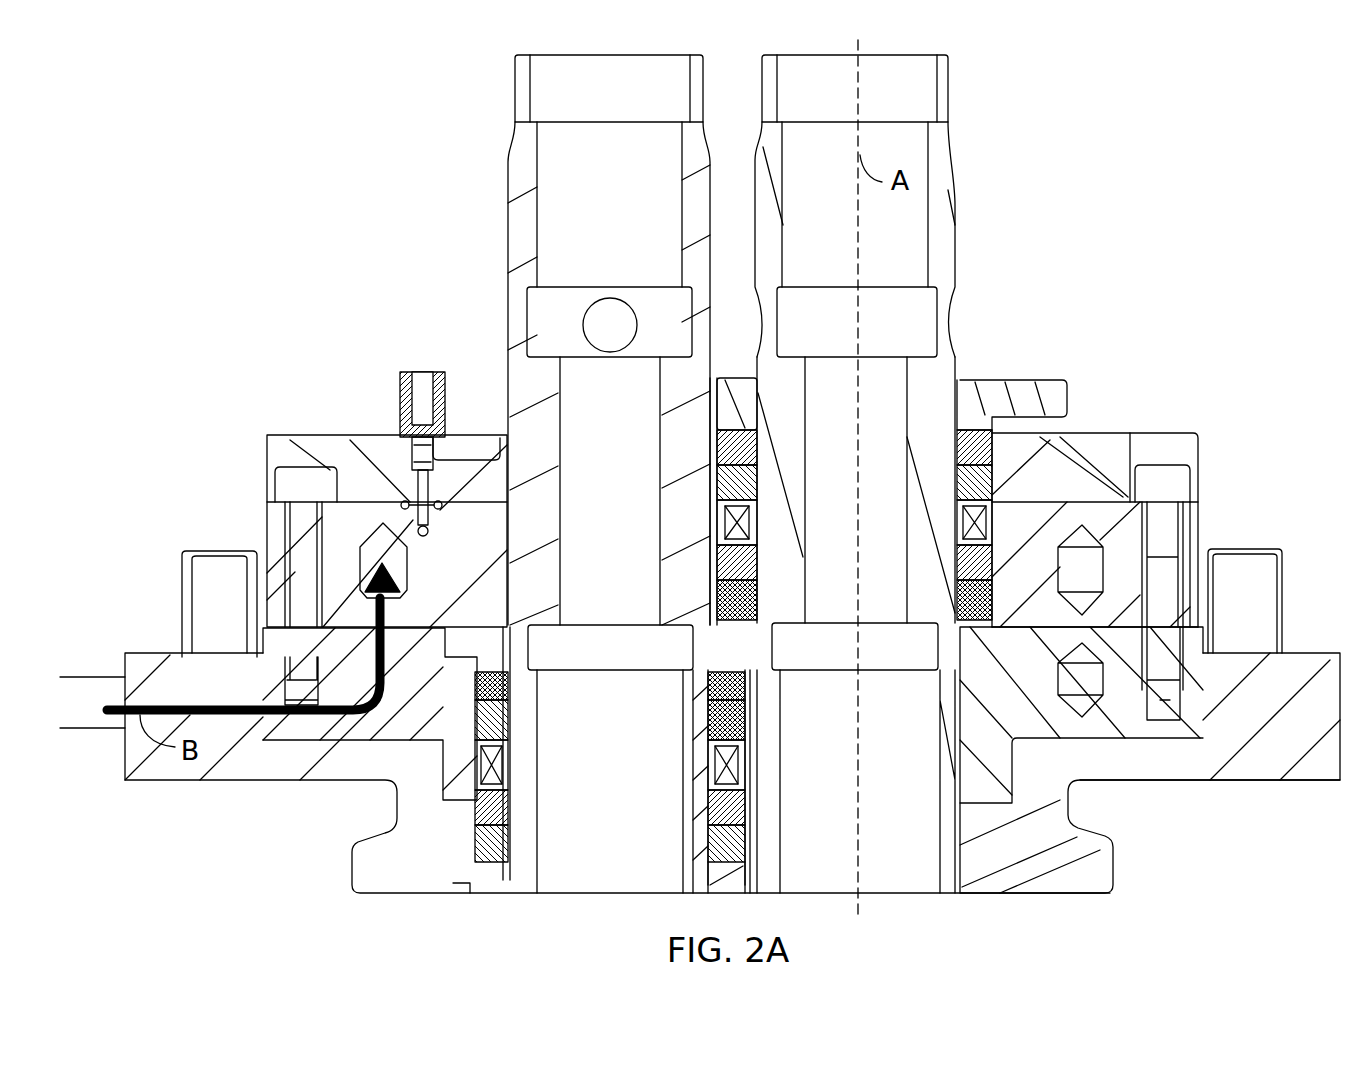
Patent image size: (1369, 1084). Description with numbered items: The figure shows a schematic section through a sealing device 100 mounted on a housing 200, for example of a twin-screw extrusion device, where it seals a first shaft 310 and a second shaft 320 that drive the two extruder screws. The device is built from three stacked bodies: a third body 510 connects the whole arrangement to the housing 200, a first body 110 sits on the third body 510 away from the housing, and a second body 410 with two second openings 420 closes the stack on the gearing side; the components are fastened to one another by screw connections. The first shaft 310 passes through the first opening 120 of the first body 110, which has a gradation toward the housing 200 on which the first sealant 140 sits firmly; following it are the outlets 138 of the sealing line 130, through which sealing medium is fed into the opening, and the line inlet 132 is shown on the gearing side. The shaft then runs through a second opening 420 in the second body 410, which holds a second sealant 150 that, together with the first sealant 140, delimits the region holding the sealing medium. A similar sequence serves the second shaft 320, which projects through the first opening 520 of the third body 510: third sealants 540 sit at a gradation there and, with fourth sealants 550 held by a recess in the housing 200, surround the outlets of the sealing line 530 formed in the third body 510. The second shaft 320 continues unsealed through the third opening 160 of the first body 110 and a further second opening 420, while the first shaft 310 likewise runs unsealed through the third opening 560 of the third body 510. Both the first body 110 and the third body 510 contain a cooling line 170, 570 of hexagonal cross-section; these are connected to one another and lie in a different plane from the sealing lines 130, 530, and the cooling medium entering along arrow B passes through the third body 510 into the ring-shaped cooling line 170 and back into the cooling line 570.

The sealing device 100 is at (1237, 333).
The first body 110 is at (1130, 552).
The first opening 120 is at (963, 666).
The sealing line 130 is at (445, 535).
The line inlet 132 is at (405, 503).
The outlets 138 is at (985, 530).
The first sealant 140 is at (945, 617).
The second sealant 150 is at (800, 395).
The third opening 160 is at (508, 600).
The cooling line 170 is at (362, 577).
The housing 200 is at (246, 790).
The first shaft 310 is at (958, 214).
The second shaft 320 is at (508, 212).
The second body 410 is at (1118, 446).
The second openings 420 is at (507, 438).
The third body 510 is at (1110, 735).
The first opening of the third body 520 is at (455, 788).
The sealing line of the third body 530 is at (720, 770).
The third sealants 540 is at (708, 700).
The fourth sealants 550 is at (497, 846).
The third opening of the third body 560 is at (960, 705).
The cooling line of the third body 570 is at (1075, 680).